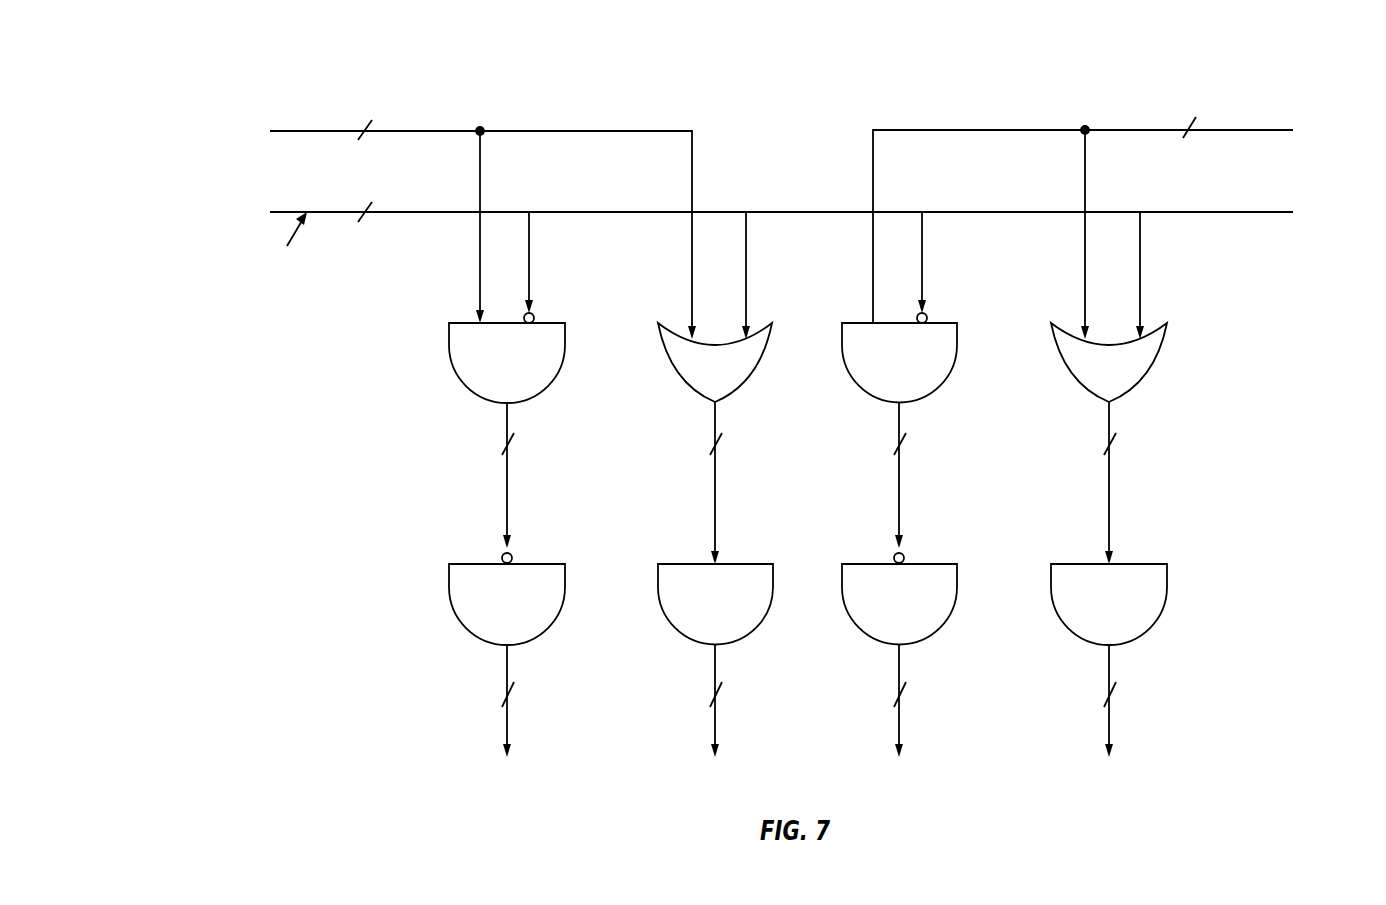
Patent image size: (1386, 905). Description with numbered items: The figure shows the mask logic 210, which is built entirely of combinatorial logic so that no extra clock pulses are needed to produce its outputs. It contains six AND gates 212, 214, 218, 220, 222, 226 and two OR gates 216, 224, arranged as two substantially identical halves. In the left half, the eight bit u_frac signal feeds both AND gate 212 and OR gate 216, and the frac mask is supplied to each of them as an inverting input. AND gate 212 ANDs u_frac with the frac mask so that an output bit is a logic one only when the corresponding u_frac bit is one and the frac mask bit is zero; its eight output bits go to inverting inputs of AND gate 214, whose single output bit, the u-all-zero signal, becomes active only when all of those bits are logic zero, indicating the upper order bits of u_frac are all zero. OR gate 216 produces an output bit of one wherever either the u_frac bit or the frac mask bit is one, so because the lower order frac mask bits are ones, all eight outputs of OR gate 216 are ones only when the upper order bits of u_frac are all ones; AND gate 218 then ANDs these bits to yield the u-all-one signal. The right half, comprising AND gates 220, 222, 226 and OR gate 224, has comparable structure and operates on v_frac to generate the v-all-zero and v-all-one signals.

The mask logic 210 is at (783, 52).
The AND gate 212 is at (450, 333).
The AND gate 214 is at (450, 567).
The OR gate 216 is at (660, 333).
The AND gate 218 is at (660, 567).
The AND gate 220 is at (843, 333).
The AND gate 222 is at (843, 567).
The OR gate 224 is at (1053, 333).
The AND gate 226 is at (1053, 567).